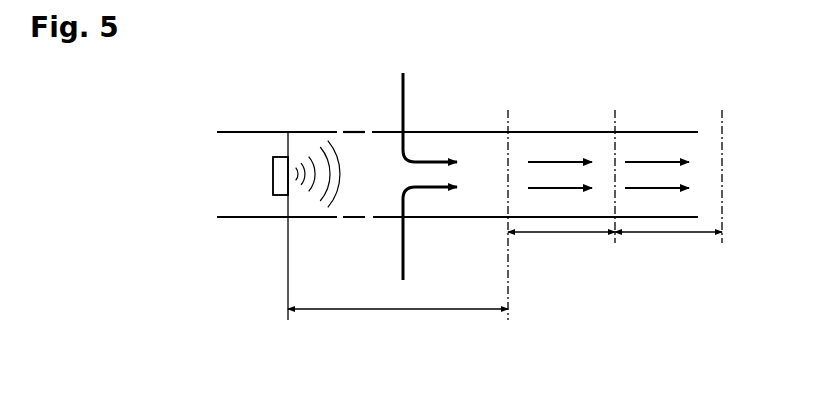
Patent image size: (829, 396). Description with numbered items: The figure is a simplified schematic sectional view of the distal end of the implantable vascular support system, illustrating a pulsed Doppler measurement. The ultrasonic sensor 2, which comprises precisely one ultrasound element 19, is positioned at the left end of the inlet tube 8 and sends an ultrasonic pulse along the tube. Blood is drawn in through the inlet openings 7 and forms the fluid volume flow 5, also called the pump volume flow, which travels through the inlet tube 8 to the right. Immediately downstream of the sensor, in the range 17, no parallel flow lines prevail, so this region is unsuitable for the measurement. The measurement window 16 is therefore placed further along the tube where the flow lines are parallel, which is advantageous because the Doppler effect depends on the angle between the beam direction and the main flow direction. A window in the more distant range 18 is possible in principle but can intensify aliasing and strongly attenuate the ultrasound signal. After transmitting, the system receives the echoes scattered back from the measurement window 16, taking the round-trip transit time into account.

The ultrasonic sensor 2 is at (282, 157).
The fluid volume flow 5 is at (405, 86).
The inlet openings 7 is at (374, 130).
The inlet tube 8 is at (563, 132).
The measurement window 16 is at (560, 233).
The range 17 is at (395, 310).
The range 18 is at (668, 233).
The ultrasound element 19 is at (273, 176).